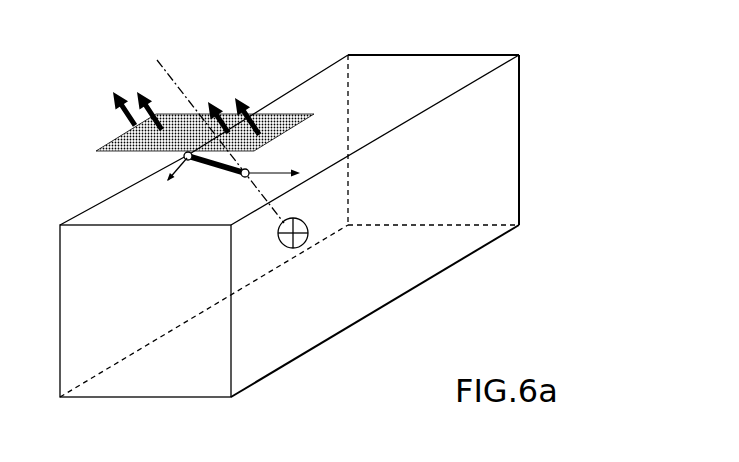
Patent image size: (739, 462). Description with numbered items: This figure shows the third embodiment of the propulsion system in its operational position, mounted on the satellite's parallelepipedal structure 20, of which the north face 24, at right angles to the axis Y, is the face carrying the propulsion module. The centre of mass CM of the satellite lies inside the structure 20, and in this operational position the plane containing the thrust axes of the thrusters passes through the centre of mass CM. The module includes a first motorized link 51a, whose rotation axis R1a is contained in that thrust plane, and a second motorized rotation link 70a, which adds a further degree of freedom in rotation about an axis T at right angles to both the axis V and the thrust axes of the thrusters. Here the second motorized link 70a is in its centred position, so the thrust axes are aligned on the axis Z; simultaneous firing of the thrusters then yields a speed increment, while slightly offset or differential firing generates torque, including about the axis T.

The parallelepipedal structure 20 is at (472, 84).
The north face 24 is at (425, 63).
The first motorized link 51a is at (249, 171).
The second motorized rotation link 70a is at (184, 156).
The axis T is at (180, 168).
The axis R1a is at (275, 175).
The centre of mass CM is at (307, 240).